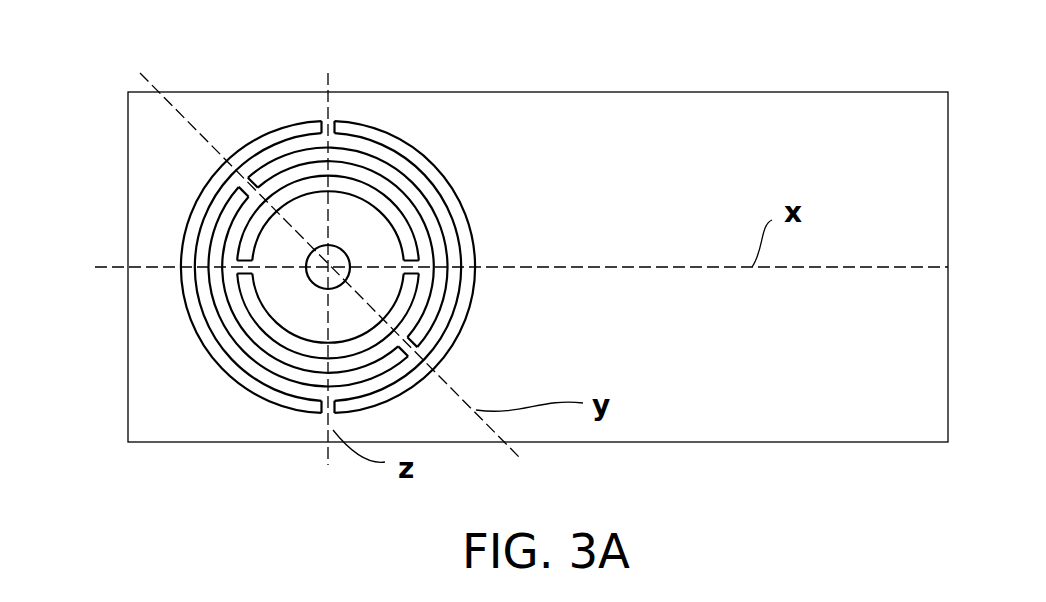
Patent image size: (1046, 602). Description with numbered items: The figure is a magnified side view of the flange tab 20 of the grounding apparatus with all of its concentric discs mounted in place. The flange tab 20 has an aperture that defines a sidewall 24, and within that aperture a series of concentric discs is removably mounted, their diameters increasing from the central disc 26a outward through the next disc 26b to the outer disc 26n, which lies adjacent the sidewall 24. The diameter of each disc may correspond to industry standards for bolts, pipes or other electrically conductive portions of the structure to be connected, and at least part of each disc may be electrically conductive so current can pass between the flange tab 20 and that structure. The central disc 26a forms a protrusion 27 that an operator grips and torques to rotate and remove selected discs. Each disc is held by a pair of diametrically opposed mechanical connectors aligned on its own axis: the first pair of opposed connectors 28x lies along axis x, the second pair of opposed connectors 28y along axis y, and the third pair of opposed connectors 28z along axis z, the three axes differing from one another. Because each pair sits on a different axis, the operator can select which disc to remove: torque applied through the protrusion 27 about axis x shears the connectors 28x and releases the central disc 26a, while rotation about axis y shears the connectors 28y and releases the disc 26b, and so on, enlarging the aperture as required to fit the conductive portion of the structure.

The flange tab 20 is at (833, 92).
The sidewall 24 is at (453, 348).
The outer disc 26n is at (407, 167).
The second disc 26b is at (408, 210).
The central disc 26a is at (370, 248).
The protrusion 27 is at (320, 290).
The first pair of opposed connectors 28x is at (413, 278).
The second pair of opposed connectors 28y is at (246, 190).
The third pair of opposed connectors 28z is at (323, 123).